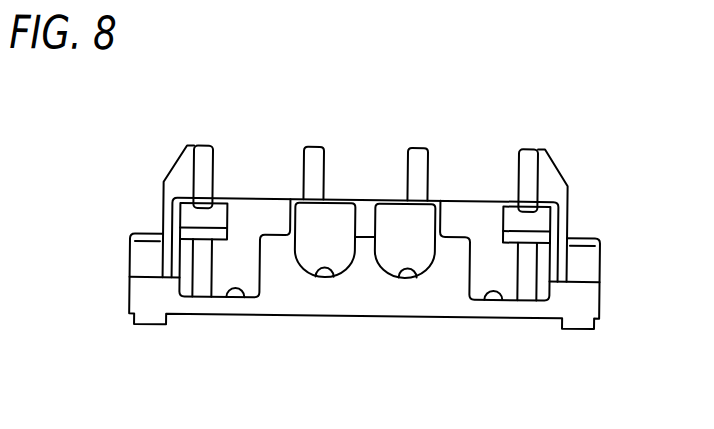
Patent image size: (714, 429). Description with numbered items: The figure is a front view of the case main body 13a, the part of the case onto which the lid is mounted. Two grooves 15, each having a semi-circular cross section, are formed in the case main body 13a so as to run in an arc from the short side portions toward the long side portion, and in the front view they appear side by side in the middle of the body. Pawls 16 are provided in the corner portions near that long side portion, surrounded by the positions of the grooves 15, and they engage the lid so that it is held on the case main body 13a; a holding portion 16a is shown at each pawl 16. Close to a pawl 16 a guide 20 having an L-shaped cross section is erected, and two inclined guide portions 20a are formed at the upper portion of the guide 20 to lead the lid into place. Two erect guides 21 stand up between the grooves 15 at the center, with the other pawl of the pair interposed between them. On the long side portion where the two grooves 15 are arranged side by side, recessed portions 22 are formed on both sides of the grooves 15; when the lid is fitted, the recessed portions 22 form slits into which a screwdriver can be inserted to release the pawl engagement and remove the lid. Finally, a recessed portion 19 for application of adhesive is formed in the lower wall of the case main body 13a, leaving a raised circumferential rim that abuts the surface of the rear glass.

The case main body 13a is at (162, 186).
The groove 15 is at (327, 273).
The pawl 16 is at (362, 217).
The terminal holding portion 16a is at (187, 216).
The recessed portion 19 is at (537, 317).
The guide 20 is at (185, 160).
The inclined guide portion 20a is at (175, 170).
The erect guide 21 is at (313, 150).
The recessed portion 22 is at (228, 292).